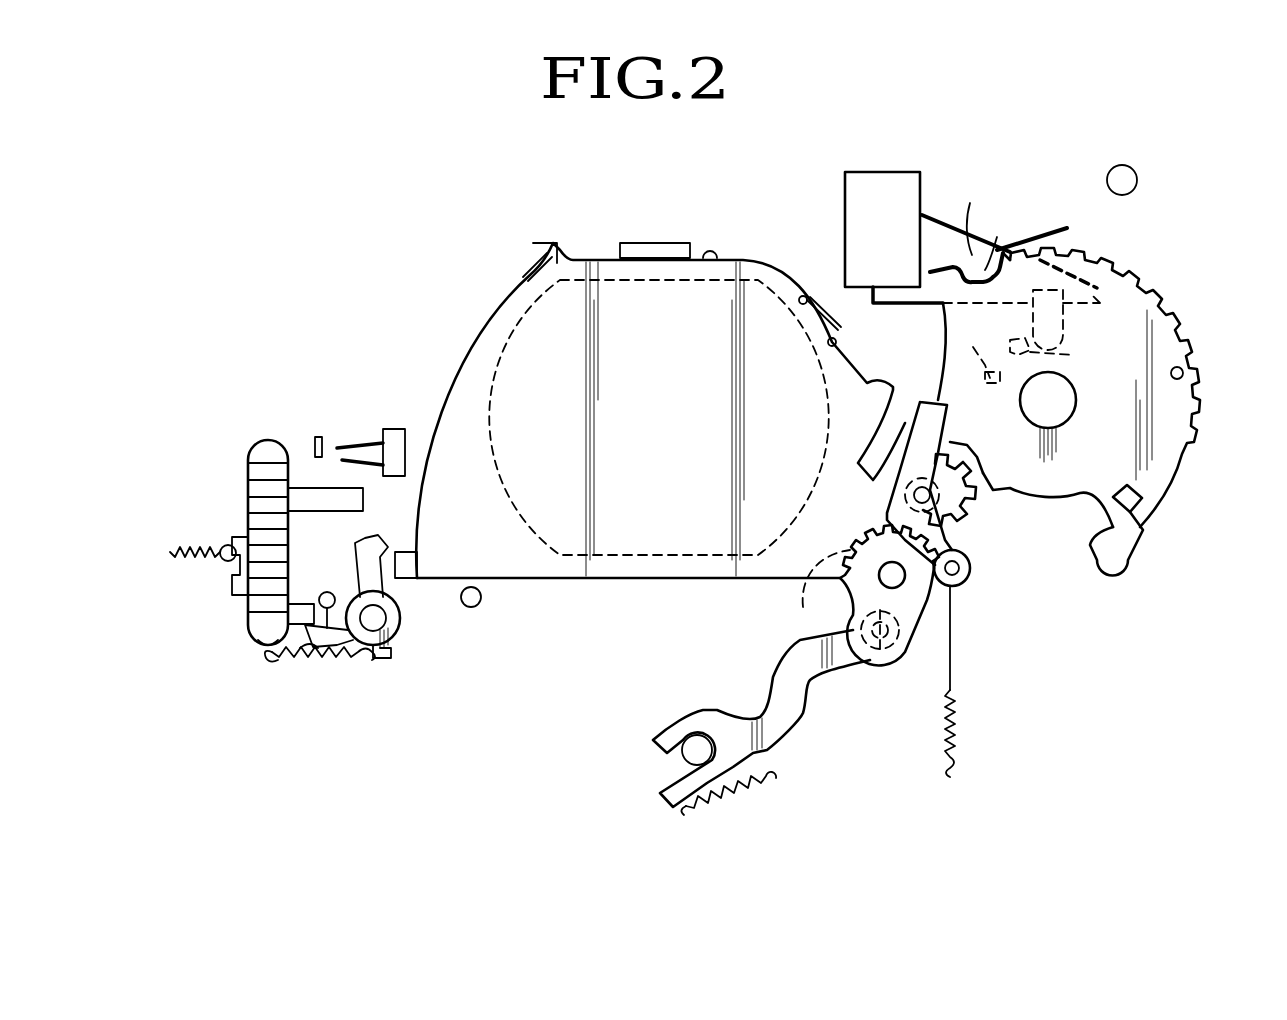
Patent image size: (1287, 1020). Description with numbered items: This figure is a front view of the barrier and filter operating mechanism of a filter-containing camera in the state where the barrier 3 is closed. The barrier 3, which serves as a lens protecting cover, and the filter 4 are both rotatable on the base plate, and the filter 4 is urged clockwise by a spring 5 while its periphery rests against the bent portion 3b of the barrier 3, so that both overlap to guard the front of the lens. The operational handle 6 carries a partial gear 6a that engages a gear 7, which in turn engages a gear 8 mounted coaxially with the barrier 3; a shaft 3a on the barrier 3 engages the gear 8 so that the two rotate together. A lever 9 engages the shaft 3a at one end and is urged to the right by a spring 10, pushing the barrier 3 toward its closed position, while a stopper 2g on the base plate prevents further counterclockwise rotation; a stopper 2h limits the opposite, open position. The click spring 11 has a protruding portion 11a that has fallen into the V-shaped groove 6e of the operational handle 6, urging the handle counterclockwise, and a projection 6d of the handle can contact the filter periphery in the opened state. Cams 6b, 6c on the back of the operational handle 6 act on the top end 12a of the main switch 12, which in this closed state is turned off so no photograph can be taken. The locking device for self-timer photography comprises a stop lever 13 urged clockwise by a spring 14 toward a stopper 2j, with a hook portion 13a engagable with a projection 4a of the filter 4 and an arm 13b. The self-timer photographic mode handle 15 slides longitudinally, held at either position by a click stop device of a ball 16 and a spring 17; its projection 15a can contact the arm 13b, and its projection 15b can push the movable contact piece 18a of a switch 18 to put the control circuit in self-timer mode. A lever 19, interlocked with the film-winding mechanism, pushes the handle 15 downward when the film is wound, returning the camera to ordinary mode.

The stopper 2g is at (474, 607).
The stopper 2h is at (1137, 180).
The stopper 2j is at (335, 652).
The barrier 3 is at (525, 560).
The shaft 3a is at (886, 655).
The bent portion 3b is at (817, 297).
The filter 4 is at (970, 575).
The projection 4a is at (405, 580).
The spring 5 is at (960, 735).
The operational handle 6 is at (1160, 437).
The partial gear 6a is at (975, 450).
The cam 6b is at (1057, 356).
The cam 6c is at (980, 349).
The projection 6d is at (1107, 558).
The V-shaped groove 6e is at (1000, 250).
The gear 7 is at (953, 513).
The gear 8 is at (840, 590).
The lever 9 is at (795, 712).
The spring 10 is at (738, 787).
The click spring 11 is at (1050, 230).
The protruding portion 11a is at (968, 250).
The main switch 12 is at (903, 178).
The top end 12a is at (1075, 316).
The stop lever 13 is at (395, 648).
The hook portion 13a is at (357, 552).
The arm 13b is at (305, 650).
The spring 14 is at (345, 655).
The self-timer photographic mode handle 15 is at (262, 622).
The projection 15a is at (266, 645).
The projection 15b is at (305, 500).
The ball 16 is at (228, 545).
The spring 17 is at (195, 560).
The switch 18 is at (395, 428).
The movable contact piece 18a is at (368, 468).
The lever 19 is at (322, 436).